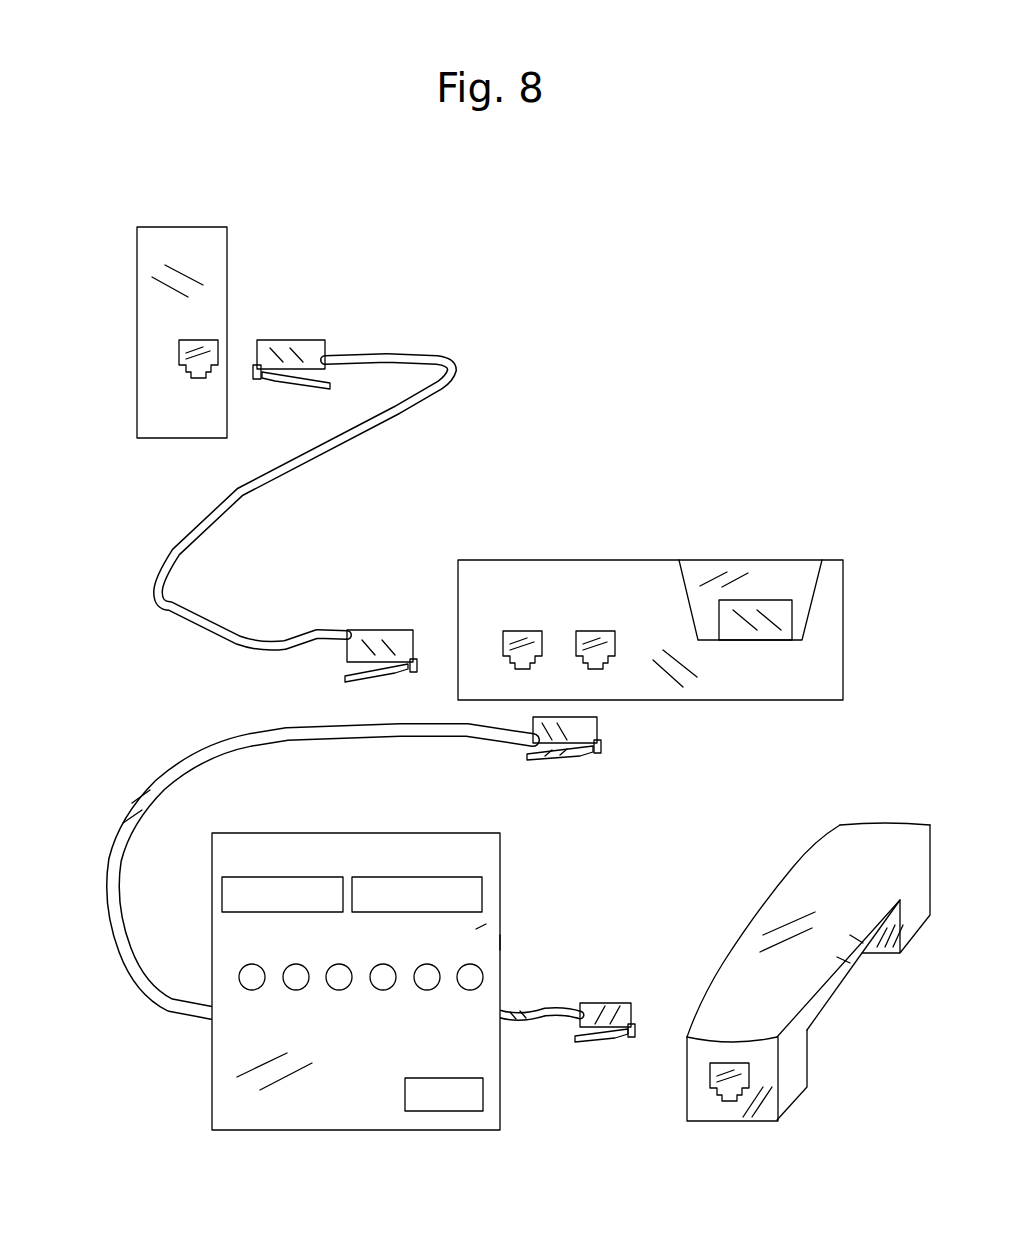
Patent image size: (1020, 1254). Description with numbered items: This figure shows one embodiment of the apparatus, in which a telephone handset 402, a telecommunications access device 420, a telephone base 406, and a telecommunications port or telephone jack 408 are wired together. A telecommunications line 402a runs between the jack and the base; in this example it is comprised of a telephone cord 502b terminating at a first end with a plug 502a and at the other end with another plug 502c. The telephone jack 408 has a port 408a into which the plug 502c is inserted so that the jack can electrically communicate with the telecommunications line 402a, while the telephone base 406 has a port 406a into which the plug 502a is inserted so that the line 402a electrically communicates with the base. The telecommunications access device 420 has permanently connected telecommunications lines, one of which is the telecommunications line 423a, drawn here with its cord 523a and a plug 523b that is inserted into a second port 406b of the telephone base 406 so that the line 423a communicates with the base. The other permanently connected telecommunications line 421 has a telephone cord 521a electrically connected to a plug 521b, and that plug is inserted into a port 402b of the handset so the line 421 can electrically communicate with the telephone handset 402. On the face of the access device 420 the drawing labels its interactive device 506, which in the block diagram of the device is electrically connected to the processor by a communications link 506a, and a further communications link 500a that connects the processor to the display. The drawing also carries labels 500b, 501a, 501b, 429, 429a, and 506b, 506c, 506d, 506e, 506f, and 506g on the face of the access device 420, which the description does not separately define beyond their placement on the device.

The telephone handset 402 is at (880, 832).
The telecommunications line 402a is at (311, 502).
The port 402b is at (730, 1081).
The telephone base 406 is at (557, 577).
The port 406a is at (523, 646).
The port 406b is at (596, 641).
The telecommunications port or telephone jack 408 is at (172, 240).
The port 408a is at (210, 353).
The telecommunications access device 420 is at (468, 833).
The telecommunications line 421 is at (559, 1037).
The telecommunications line 423a is at (283, 852).
The display 429 is at (490, 943).
The display portion 429a is at (476, 929).
The communications line or link 500a is at (217, 880).
The time remaining display 500b is at (486, 885).
The time set label 501a is at (262, 846).
The time remaining label 501b is at (392, 846).
The plug 502a is at (378, 636).
The telephone cord 502b is at (318, 456).
The plug 502c is at (297, 346).
The interactive device 506 is at (364, 1044).
The communications line or link 506a is at (249, 965).
The button 2 506b is at (293, 965).
The button 3 506c is at (336, 965).
The button 4 506d is at (380, 965).
The button 5 506e is at (424, 965).
The button 6 506f is at (480, 967).
The enter button 506g is at (478, 1108).
The telephone cord 521a is at (552, 1013).
The plug 521b is at (620, 1005).
The cord 523a is at (120, 850).
The plug 523b is at (585, 728).